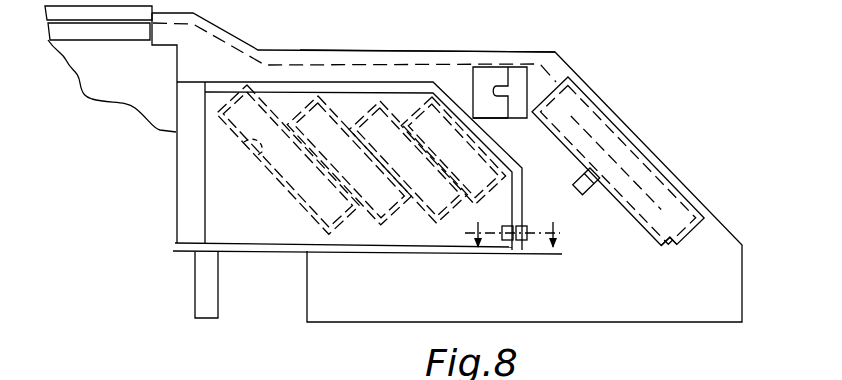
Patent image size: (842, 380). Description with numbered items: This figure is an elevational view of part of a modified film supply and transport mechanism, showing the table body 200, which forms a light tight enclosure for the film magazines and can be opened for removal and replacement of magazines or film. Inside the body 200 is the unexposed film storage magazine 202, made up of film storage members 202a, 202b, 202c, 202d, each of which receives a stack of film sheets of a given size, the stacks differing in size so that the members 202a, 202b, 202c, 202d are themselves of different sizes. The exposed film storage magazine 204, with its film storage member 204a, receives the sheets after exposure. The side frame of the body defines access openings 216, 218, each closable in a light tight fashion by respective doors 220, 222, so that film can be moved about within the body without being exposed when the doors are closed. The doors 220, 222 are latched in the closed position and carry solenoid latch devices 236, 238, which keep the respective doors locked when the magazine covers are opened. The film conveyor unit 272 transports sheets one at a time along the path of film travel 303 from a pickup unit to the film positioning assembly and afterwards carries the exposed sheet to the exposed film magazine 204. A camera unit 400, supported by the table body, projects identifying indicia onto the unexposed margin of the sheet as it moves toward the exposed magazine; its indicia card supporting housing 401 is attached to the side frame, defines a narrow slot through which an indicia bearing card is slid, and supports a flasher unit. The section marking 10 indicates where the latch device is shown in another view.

The section line 10 is at (515, 224).
The table body 200 is at (632, 84).
The unexposed film storage magazine 202 is at (395, 196).
The film storage member 202a is at (352, 237).
The film storage member 202b is at (400, 222).
The film storage member 202c is at (455, 224).
The film storage member 202d is at (508, 180).
The exposed film storage magazine 204 is at (660, 191).
The film storage member 204a is at (700, 212).
The access opening 216 is at (262, 154).
The access opening 218 is at (620, 122).
The door 220 is at (300, 233).
The door 222 is at (620, 162).
The solenoid latch device 236 is at (516, 246).
The solenoid latch device 238 is at (596, 206).
The film conveyor unit 272 is at (330, 64).
The path of film travel 303 is at (432, 64).
The camera unit 400 is at (520, 79).
The indicia card supporting housing 401 is at (498, 118).